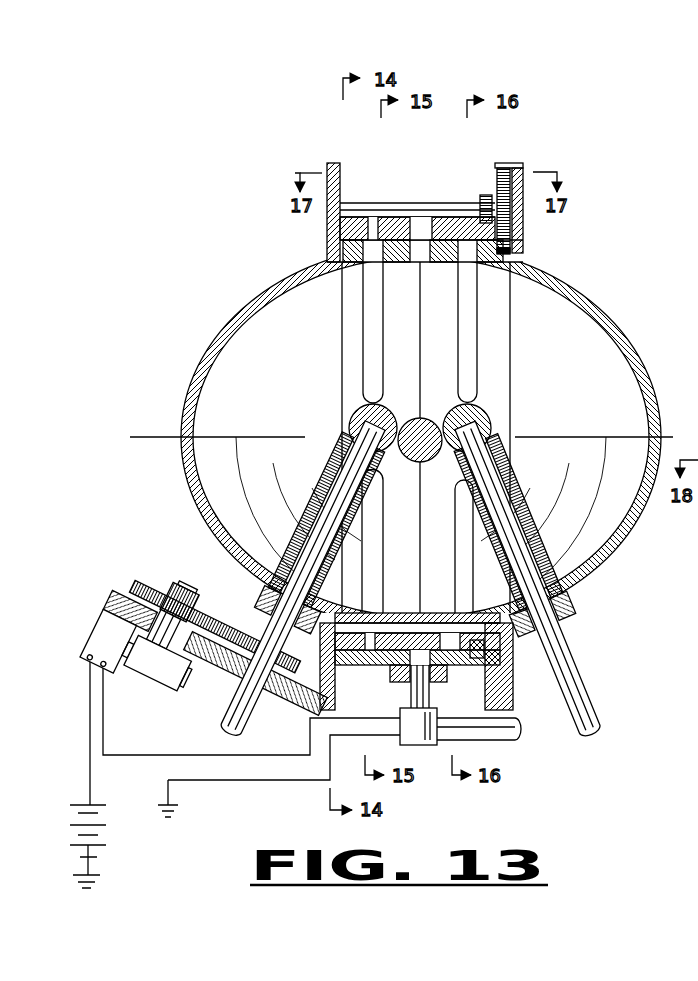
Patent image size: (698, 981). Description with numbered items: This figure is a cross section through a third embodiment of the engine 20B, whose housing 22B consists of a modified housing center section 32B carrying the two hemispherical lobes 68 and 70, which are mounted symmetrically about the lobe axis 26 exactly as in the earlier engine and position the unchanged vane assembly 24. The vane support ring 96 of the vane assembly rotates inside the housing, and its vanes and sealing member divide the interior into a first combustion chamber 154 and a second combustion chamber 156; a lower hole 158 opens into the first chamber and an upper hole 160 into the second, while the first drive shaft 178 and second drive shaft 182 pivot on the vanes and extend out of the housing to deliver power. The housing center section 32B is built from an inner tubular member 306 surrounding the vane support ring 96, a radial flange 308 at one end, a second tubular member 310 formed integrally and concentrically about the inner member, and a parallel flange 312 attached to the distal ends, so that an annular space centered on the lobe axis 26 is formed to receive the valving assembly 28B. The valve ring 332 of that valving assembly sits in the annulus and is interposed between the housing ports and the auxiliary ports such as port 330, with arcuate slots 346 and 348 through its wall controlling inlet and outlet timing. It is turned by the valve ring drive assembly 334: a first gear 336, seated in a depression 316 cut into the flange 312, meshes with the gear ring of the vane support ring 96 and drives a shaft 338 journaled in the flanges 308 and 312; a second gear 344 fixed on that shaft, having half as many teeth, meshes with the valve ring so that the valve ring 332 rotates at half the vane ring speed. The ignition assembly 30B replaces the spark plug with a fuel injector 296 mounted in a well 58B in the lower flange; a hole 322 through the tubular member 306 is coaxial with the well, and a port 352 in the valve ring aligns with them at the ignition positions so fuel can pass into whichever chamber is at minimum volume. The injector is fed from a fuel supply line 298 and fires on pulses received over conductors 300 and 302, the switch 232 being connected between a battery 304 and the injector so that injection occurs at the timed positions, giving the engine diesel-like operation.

The engine 20B is at (612, 278).
The housing 22B is at (634, 333).
The vane assembly 24 is at (516, 305).
The lobe axis 26 is at (164, 437).
The valving assembly 28B is at (500, 680).
The ignition assembly 30B is at (113, 674).
The housing center section 32B is at (528, 228).
The well 58B is at (414, 672).
The first hemispherical lobe 68 is at (241, 318).
The second hemispherical lobe 70 is at (650, 384).
The vane support ring 96 is at (500, 365).
The first combustion chamber 154 is at (412, 543).
The second combustion chamber 156 is at (252, 360).
The hole 158 is at (421, 610).
The hole 160 is at (416, 264).
The first drive shaft 178 is at (338, 512).
The second drive shaft 182 is at (512, 538).
The switch 232 is at (212, 659).
The fuel injector 296 is at (424, 746).
The fuel supply line 298 is at (505, 740).
The conductor 300 is at (172, 758).
The conductor 302 is at (192, 781).
The battery 304 is at (92, 803).
The tubular member 306 is at (365, 272).
The flange 308 is at (330, 182).
The second tubular member 310 is at (342, 226).
The flange 312 is at (523, 172).
The depression 316 is at (501, 168).
The hole 322 is at (396, 640).
The auxiliary port 330 is at (159, 663).
The valve ring 332 is at (457, 226).
The valve ring drive assembly 334 is at (509, 252).
The first gear 336 is at (537, 191).
The shaft 338 is at (352, 204).
The second gear 344 is at (485, 196).
The slot 346 is at (472, 646).
The slot 348 is at (380, 238).
The port 352 is at (418, 228).